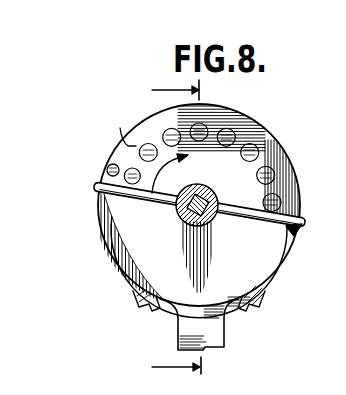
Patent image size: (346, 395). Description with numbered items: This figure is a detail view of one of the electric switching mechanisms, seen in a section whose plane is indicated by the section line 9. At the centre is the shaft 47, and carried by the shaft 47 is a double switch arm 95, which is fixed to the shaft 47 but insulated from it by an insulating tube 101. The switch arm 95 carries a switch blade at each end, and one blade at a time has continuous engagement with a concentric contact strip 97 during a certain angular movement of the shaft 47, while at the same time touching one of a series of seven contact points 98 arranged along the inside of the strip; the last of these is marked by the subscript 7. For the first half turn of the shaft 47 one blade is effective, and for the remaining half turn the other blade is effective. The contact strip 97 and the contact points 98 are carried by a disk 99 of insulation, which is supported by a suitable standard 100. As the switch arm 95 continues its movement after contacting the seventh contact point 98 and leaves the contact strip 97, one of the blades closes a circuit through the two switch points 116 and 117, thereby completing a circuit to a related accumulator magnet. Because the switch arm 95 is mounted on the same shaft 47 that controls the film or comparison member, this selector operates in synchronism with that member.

The ball retainer hook 7 is at (125, 130).
The section line 9- 9 is at (183, 229).
The shaft 47 is at (201, 222).
The double switch arm 95 is at (288, 233).
The concentric contact strip 97 is at (263, 135).
The contact points 98 is at (144, 151).
The disk of insulation 99 is at (135, 257).
The standard 100 is at (183, 328).
The insulating tube 101 is at (181, 216).
The switch point 116 is at (107, 169).
The switch point 117 is at (99, 199).